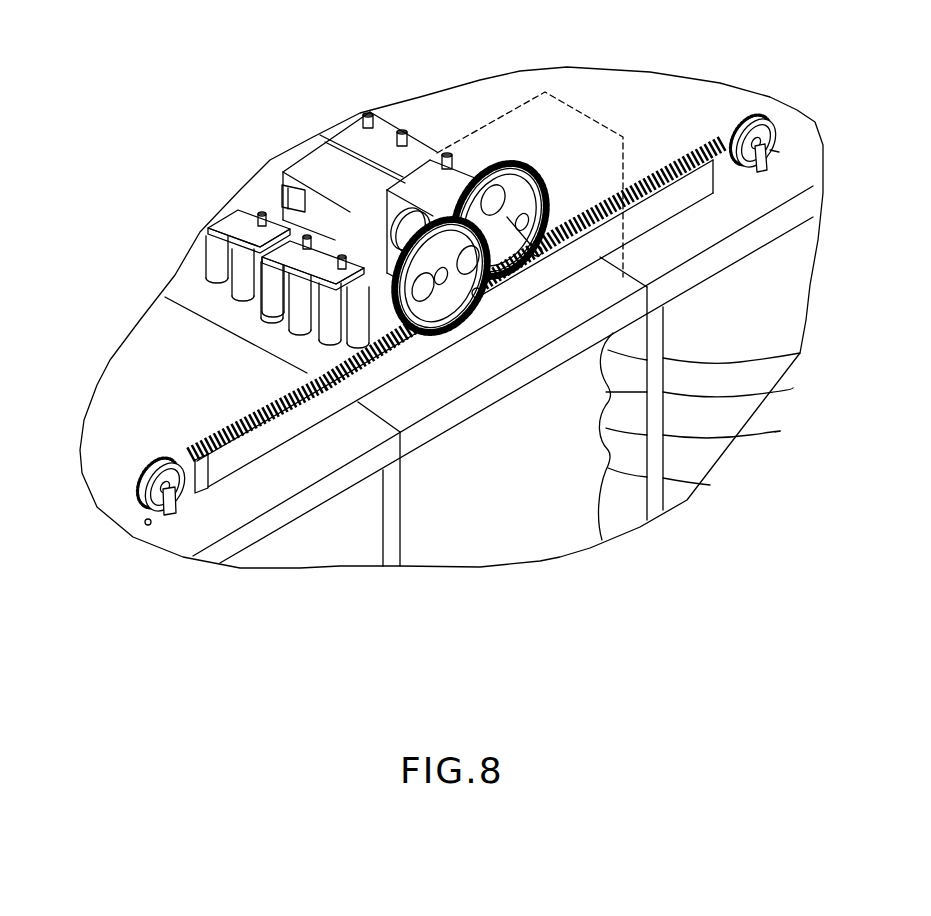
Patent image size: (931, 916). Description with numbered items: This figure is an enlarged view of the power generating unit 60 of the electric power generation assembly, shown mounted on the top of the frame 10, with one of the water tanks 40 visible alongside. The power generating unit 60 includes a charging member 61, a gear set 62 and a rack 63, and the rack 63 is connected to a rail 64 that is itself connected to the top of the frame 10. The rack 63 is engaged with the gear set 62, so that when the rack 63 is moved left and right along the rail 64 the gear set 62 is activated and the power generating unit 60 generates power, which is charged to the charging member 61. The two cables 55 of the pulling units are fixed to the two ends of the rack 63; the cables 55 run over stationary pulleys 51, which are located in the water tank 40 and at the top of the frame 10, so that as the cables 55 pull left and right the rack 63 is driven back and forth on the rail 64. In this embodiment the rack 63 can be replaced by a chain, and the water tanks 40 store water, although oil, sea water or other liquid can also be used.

The frame 10 is at (427, 432).
The water tank 40 is at (730, 332).
The stationary pulley 51 is at (748, 117).
The cable 55 is at (146, 521).
The power generating unit 60 is at (437, 116).
The charging member 61 is at (217, 258).
The gear set 62 is at (526, 152).
The rack 63 is at (240, 413).
The rail 64 is at (245, 455).